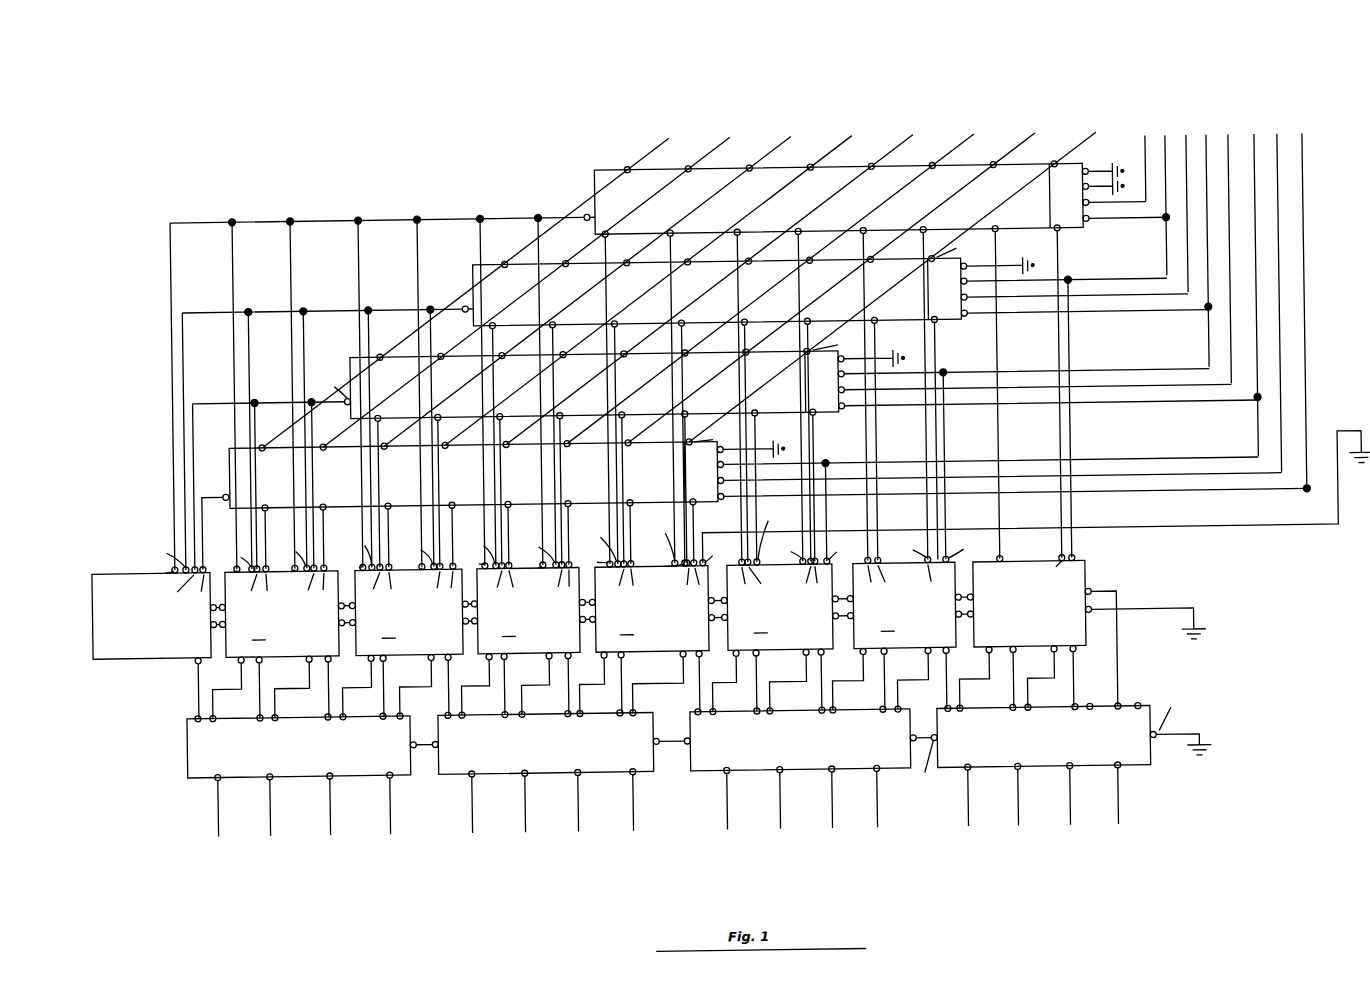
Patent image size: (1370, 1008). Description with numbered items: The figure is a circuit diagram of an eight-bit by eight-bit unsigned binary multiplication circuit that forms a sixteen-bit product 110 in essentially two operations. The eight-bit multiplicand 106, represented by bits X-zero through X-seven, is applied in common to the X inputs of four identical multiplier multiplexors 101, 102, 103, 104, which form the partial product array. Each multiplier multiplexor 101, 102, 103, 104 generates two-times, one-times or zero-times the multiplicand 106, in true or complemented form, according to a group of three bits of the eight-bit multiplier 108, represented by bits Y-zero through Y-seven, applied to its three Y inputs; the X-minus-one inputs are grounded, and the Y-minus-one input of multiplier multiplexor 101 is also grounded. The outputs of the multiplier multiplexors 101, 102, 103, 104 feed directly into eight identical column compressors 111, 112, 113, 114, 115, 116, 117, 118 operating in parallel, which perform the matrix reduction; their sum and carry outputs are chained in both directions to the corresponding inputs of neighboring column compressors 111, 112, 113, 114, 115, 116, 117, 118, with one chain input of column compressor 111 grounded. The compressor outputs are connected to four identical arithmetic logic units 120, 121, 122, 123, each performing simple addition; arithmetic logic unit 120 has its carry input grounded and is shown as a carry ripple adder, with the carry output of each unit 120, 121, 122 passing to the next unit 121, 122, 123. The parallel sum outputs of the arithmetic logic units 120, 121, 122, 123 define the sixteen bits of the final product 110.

The multiplier multiplexor 101 is at (600, 178).
The multiplier multiplexor 102 is at (476, 266).
The multiplier multiplexor 103 is at (352, 360).
The multiplier multiplexor 104 is at (230, 450).
The multiplicand 106 is at (683, 268).
The multiplier 108 is at (1223, 288).
The product 110 is at (666, 835).
The column compressor 111 is at (1043, 622).
The column compressor 112 is at (917, 623).
The column compressor 113 is at (792, 623).
The column compressor 114 is at (665, 623).
The column compressor 115 is at (541, 623).
The column compressor 116 is at (422, 623).
The column compressor 117 is at (295, 623).
The column compressor 118 is at (165, 627).
The arithmetic logic unit 120 is at (1053, 737).
The arithmetic logic unit 121 is at (812, 752).
The arithmetic logic unit 122 is at (553, 757).
The arithmetic logic unit 123 is at (312, 757).